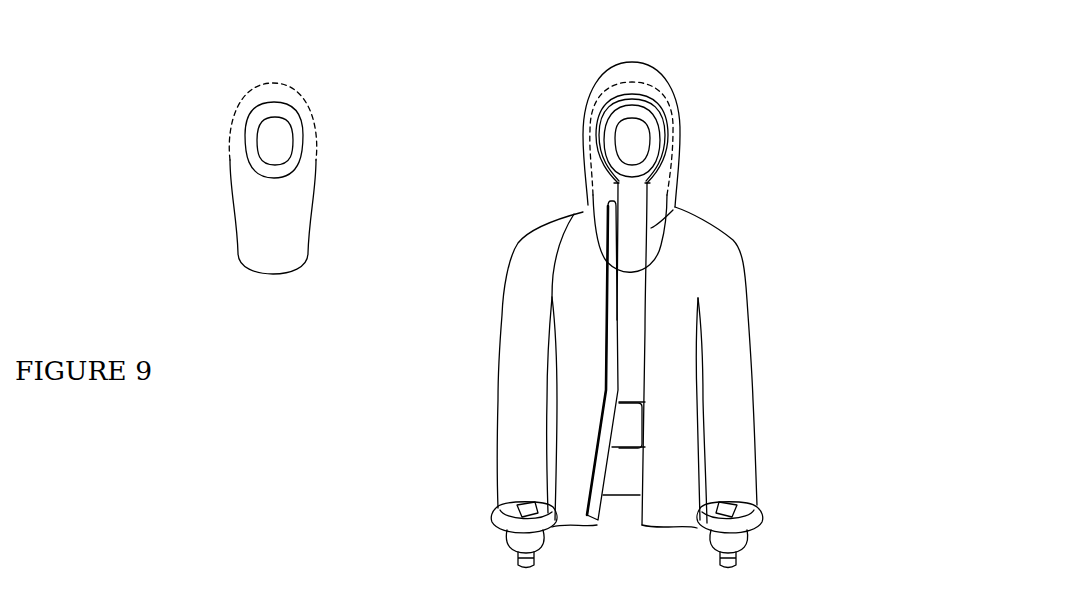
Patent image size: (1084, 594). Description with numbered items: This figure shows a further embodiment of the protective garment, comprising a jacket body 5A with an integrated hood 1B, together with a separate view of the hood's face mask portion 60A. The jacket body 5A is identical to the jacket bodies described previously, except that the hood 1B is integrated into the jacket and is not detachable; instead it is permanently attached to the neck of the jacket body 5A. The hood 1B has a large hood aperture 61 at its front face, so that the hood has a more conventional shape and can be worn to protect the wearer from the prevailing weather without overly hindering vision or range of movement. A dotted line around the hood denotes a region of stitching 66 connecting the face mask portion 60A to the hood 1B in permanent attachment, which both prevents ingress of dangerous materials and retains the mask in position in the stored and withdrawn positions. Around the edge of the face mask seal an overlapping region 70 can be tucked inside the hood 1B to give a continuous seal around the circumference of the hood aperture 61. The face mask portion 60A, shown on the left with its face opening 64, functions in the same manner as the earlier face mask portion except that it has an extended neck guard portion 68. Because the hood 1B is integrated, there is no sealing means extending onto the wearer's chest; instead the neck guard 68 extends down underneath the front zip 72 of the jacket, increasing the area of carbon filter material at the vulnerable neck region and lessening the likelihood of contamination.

The jacket body 5A is at (690, 415).
The hood 1B is at (678, 100).
The region of stitching 66 is at (653, 88).
The overlapping region 70 is at (670, 128).
The hood aperture 61 is at (658, 163).
The front zip 72 is at (610, 212).
The face mask portion 60A is at (245, 191).
The face opening of hood pattern piece 64 is at (295, 160).
The neck guard portion 68 is at (258, 248).